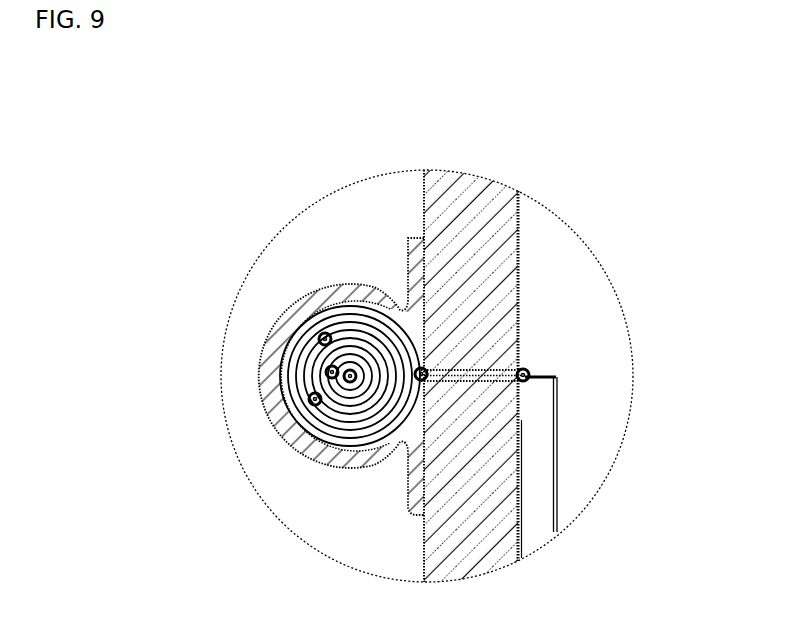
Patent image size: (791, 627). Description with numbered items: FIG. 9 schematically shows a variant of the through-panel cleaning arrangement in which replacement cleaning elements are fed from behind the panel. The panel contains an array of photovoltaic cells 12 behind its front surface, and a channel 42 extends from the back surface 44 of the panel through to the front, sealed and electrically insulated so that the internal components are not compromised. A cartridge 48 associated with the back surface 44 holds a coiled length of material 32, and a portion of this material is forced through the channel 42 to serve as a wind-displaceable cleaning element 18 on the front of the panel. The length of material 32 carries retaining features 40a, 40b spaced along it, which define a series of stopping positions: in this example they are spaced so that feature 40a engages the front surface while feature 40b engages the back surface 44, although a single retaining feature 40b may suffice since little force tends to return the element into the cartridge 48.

The photovoltaic cells 12 is at (520, 232).
The cleaning element 18 is at (556, 468).
The length of material 32 is at (292, 388).
The retaining feature 40a is at (319, 338).
The retaining feature 40b is at (421, 368).
The channel 42 is at (528, 379).
The back surface 44 is at (422, 562).
The cartridge 48 is at (305, 300).